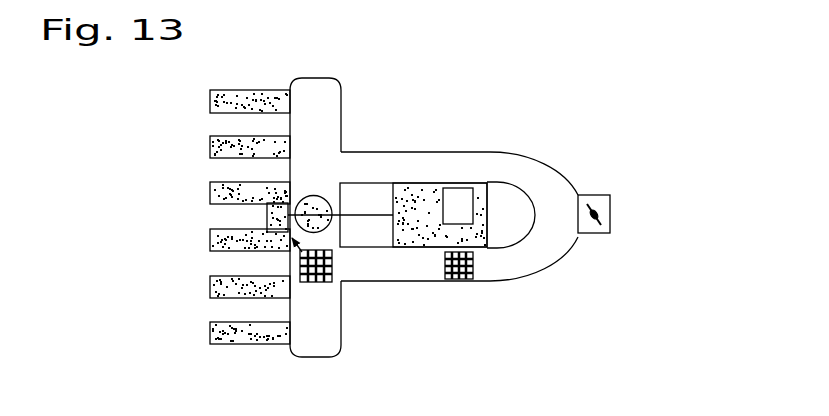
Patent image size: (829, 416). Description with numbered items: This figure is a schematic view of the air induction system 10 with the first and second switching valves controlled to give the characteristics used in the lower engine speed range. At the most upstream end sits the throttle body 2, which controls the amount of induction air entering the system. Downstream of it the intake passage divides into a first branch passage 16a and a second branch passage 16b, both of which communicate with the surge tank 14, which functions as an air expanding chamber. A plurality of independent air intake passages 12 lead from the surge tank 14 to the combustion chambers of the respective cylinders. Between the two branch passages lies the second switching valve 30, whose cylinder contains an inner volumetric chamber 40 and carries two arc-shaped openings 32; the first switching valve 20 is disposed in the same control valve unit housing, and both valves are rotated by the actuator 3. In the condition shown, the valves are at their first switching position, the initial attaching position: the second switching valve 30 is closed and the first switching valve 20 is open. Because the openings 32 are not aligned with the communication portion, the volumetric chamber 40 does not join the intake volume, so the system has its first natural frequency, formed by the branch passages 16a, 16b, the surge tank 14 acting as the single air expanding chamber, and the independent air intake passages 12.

The throttle body 2 is at (601, 193).
The actuator 3 is at (332, 272).
The air induction system 10 is at (613, 261).
The independent air intake passages 12 is at (210, 192).
The surge tank 14 is at (320, 117).
The first branch passage 16a is at (520, 173).
The second branch passage 16b is at (525, 255).
The first switching valve 20 is at (327, 190).
The second switching valve 30 is at (412, 181).
The openings 32 is at (477, 260).
The volumetric chamber 40 is at (437, 196).